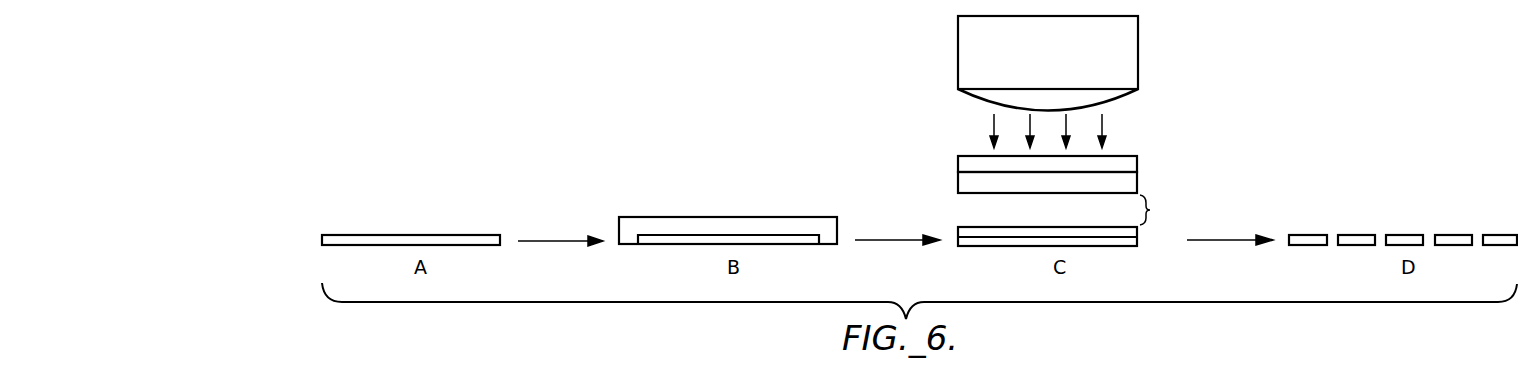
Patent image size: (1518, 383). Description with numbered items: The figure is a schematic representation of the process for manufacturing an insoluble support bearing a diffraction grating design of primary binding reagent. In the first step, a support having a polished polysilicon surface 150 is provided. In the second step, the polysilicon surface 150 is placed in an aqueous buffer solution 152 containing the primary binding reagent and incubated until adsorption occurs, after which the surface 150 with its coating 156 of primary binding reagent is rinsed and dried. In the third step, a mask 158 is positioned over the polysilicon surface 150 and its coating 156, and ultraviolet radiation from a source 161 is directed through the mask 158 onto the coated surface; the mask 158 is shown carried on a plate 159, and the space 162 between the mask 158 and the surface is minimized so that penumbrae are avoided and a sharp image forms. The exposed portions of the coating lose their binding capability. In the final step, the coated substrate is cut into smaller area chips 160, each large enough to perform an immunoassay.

The polysilicon surface 150 is at (400, 235).
The aqueous buffer solution 152 is at (648, 217).
The coating of primary binding reagent 156 is at (968, 227).
The mask 158 is at (1138, 183).
The mask support plate 159 is at (1138, 165).
The chips 160 is at (1313, 235).
The light source 161 is at (1140, 43).
The gap 162 is at (1165, 210).